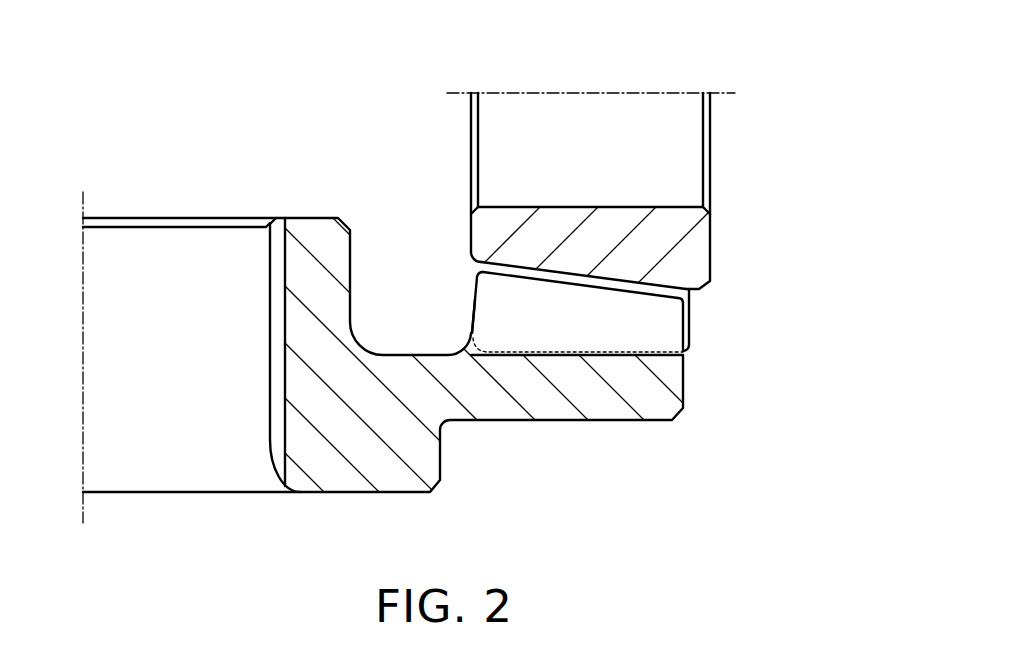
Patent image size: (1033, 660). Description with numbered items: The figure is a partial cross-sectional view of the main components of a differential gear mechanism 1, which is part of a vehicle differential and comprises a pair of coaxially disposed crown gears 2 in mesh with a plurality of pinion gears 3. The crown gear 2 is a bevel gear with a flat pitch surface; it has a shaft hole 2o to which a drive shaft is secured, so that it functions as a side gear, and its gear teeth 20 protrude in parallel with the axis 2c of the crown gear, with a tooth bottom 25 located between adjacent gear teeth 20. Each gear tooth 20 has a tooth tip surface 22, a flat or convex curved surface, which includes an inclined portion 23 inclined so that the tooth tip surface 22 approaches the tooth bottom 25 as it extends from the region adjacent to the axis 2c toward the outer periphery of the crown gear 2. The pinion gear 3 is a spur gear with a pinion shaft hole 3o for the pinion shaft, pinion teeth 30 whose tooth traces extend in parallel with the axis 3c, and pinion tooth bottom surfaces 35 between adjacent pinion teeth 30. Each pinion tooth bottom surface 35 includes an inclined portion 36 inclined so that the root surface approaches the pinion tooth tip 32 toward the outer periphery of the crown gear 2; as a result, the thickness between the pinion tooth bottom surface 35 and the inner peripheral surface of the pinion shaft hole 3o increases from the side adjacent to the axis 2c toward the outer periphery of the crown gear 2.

The differential gear mechanism 1 is at (738, 108).
The crown gear 2 is at (368, 470).
The axis of crown gear 2c is at (84, 346).
The shaft hole 2o is at (195, 329).
The pinion gear 3 is at (687, 147).
The axis of pinion gear 3c is at (574, 94).
The pinion shaft hole 3o is at (604, 134).
The gear tooth 20 is at (502, 310).
The tooth tip surface 22 is at (537, 278).
The inclined portion 23 is at (617, 278).
The tooth bottom 25 is at (658, 352).
The pinion tooth 30 is at (474, 290).
The pinion tooth tip 32 is at (505, 352).
The pinion tooth bottom surface 35 is at (575, 270).
The inclined portion 36 is at (636, 283).